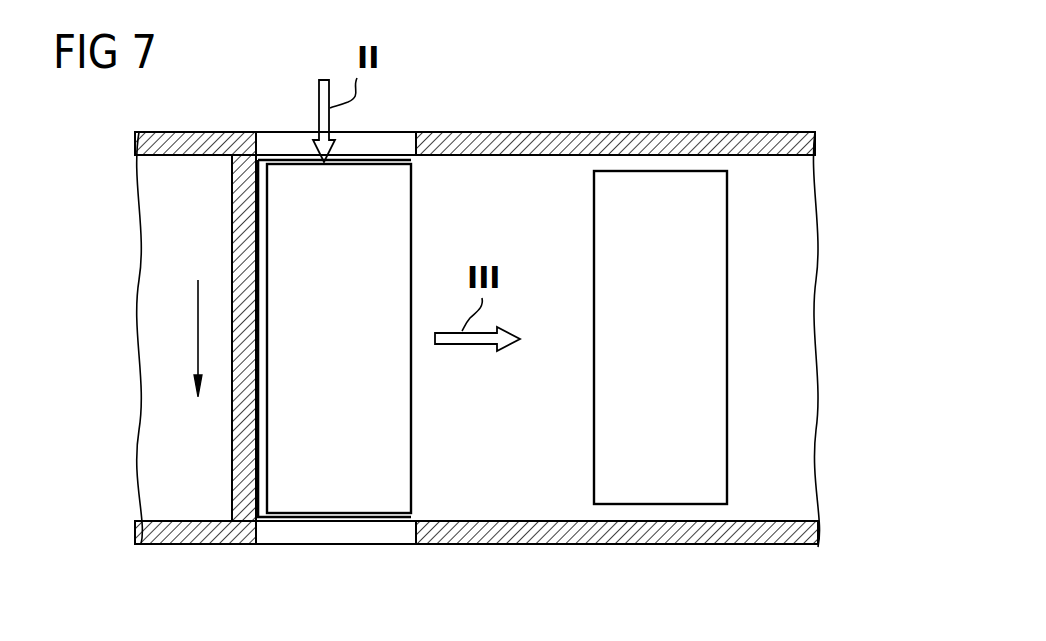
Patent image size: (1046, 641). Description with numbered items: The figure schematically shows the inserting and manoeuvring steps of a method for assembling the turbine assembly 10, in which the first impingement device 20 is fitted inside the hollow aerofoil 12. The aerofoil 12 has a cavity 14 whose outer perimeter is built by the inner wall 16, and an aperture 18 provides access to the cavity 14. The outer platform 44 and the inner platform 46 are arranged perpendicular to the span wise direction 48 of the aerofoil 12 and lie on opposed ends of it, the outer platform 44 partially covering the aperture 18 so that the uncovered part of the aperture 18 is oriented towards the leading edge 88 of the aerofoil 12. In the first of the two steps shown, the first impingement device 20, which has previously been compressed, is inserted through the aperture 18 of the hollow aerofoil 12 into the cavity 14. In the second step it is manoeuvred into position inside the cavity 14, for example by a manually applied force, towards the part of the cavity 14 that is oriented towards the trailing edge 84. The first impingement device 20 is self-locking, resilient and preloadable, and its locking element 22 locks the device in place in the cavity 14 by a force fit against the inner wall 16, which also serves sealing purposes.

The turbine assembly 10 is at (667, 117).
The aerofoil 12 is at (551, 546).
The cavity 14 is at (549, 216).
The inner wall 16 is at (505, 186).
The aperture 18 is at (403, 138).
The first impingement device 20 is at (388, 498).
The locking element 22 is at (262, 497).
The outer platform 44 is at (730, 140).
The inner platform 46 is at (750, 535).
The span wise direction 48 is at (198, 328).
The trailing edge 84 is at (780, 366).
The leading edge 88 is at (137, 456).